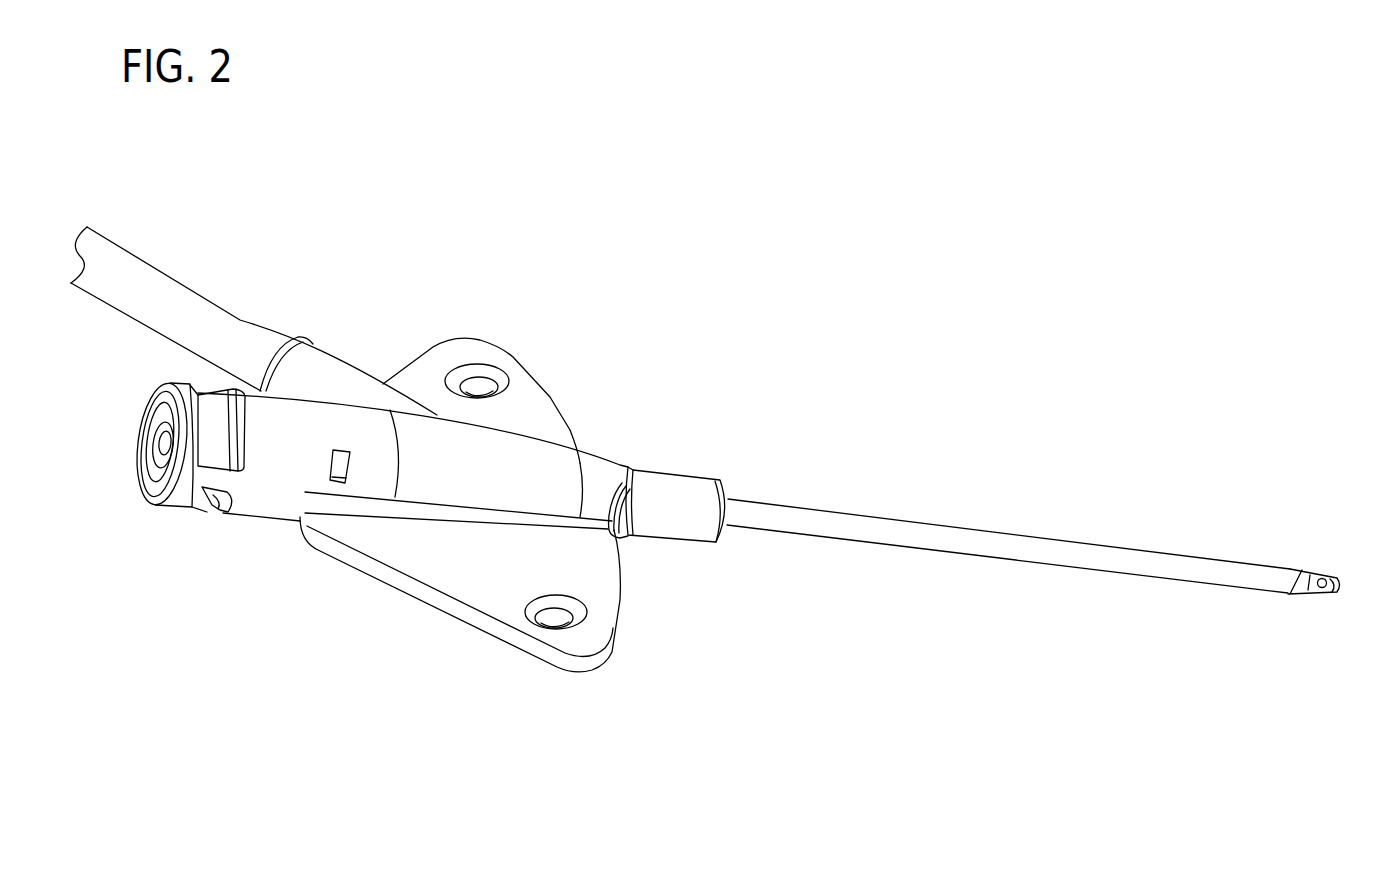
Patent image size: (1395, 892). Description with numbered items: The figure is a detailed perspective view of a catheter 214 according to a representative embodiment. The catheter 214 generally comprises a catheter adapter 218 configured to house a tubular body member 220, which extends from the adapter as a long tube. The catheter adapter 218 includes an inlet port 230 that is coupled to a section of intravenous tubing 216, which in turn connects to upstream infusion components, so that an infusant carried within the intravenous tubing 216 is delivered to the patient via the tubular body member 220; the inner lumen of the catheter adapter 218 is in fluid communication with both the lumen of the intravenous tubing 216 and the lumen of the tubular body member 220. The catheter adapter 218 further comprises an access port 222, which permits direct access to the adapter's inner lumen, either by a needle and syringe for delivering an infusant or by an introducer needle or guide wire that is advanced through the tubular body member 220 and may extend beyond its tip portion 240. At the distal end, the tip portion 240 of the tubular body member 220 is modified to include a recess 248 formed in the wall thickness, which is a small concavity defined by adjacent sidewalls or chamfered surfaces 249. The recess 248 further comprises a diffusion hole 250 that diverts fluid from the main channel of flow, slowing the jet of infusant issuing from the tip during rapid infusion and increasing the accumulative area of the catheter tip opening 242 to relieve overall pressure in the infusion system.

The catheter 214 is at (855, 305).
The intravenous tubing 216 is at (150, 298).
The catheter adapter 218 is at (503, 453).
The tubular body member 220 is at (883, 533).
The access port 222 is at (166, 444).
The inlet port 230 is at (337, 382).
The tip portion 240 is at (1324, 580).
The catheter tip opening 242 is at (1348, 590).
The recess 248 is at (1329, 576).
The chamfered surfaces 249 is at (1308, 578).
The diffusion hole 250 is at (1330, 594).